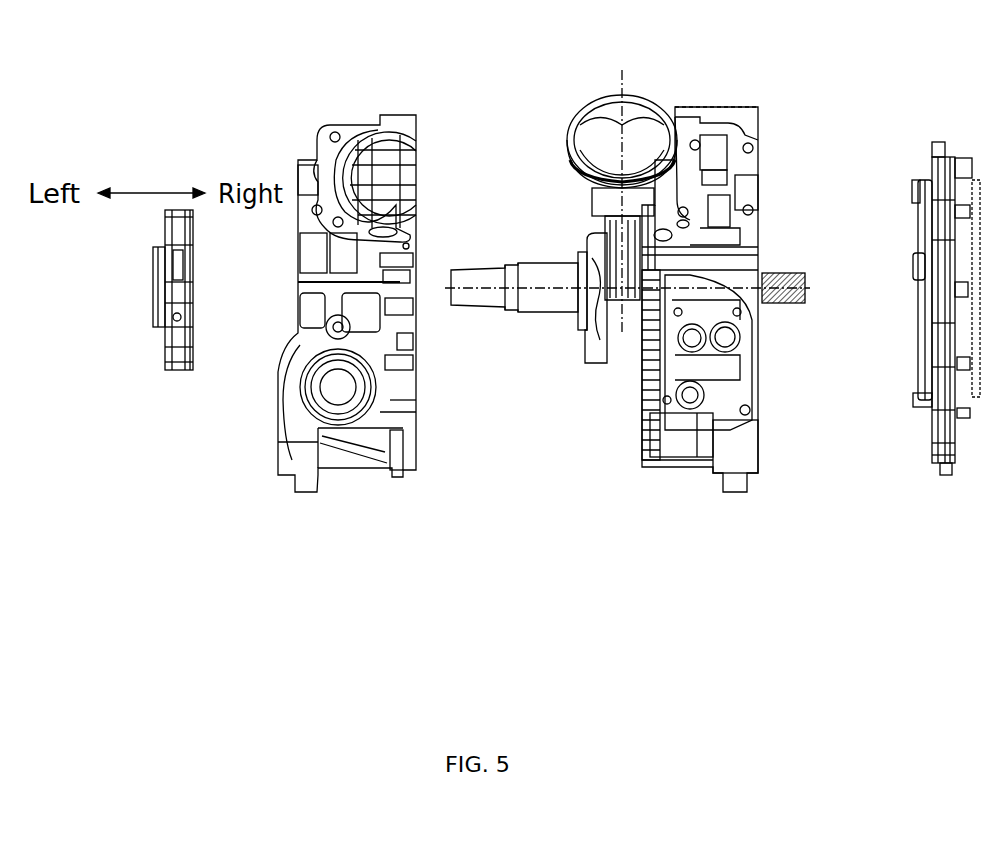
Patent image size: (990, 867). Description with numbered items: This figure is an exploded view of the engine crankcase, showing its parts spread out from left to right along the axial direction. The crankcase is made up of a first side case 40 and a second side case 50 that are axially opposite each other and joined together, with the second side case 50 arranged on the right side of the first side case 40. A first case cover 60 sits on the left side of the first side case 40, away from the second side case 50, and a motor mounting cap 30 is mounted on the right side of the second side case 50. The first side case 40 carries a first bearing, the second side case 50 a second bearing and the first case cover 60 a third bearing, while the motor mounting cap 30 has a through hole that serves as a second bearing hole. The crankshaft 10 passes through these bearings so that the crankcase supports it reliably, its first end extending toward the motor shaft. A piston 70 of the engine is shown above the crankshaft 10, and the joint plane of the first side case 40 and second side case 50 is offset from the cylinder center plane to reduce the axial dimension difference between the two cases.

The crankshaft 10 is at (547, 293).
The motor mounting cap 30 is at (237, 555).
The first side case 40 is at (362, 462).
The second side case 50 is at (702, 450).
The first case cover 60 is at (178, 370).
The piston 70 is at (652, 100).